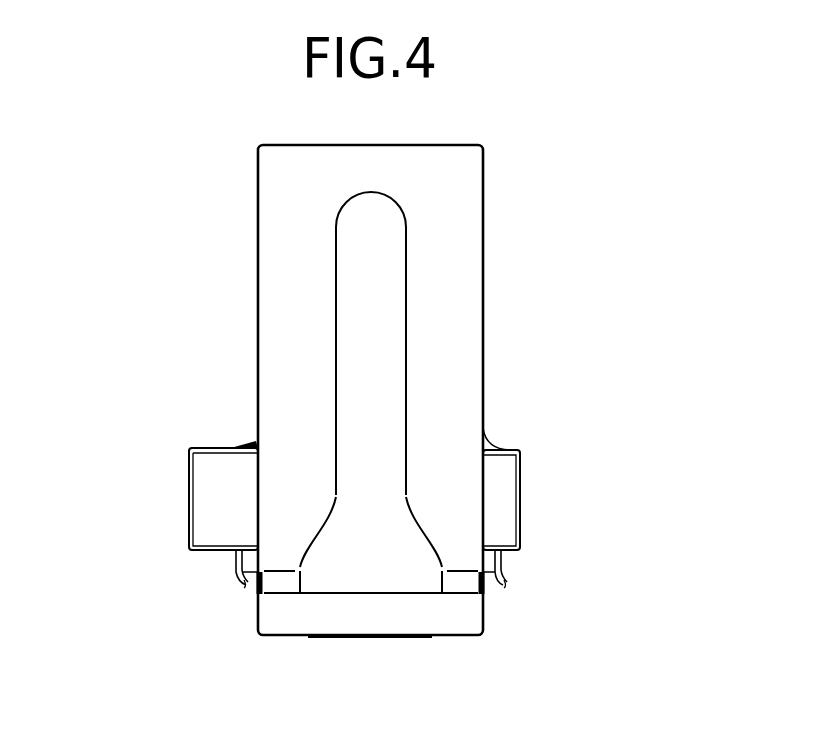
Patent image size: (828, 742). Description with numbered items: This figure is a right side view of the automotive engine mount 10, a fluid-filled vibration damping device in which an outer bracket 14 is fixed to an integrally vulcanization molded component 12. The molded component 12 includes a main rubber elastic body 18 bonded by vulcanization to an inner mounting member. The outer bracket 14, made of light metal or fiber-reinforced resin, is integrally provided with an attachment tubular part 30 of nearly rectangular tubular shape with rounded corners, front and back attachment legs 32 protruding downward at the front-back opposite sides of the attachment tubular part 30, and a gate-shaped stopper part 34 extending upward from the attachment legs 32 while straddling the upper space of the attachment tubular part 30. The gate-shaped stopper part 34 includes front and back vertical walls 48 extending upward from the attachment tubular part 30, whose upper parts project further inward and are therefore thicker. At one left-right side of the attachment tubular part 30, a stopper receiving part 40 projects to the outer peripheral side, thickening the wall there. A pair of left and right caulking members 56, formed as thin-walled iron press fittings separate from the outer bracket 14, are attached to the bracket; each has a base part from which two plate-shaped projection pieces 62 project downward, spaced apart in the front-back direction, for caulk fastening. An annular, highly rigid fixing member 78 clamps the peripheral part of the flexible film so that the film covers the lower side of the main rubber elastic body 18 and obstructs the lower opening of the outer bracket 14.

The engine mount 10 is at (376, 417).
The integrally vulcanization molded component 12 is at (501, 431).
The outer bracket 14 is at (546, 473).
The main rubber elastic body 18 is at (254, 444).
The attachment tubular part 30 is at (500, 485).
The attachment leg 32 is at (450, 617).
The gate-shaped stopper part 34 is at (254, 287).
The stopper receiving part 40 is at (200, 497).
The vertical wall 48 is at (446, 363).
The caulking member 56 is at (232, 560).
The projection piece 62 is at (245, 583).
The fixing member 78 is at (259, 584).